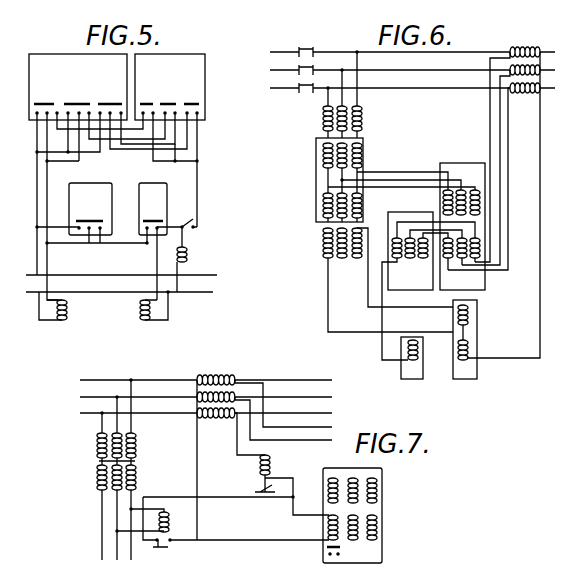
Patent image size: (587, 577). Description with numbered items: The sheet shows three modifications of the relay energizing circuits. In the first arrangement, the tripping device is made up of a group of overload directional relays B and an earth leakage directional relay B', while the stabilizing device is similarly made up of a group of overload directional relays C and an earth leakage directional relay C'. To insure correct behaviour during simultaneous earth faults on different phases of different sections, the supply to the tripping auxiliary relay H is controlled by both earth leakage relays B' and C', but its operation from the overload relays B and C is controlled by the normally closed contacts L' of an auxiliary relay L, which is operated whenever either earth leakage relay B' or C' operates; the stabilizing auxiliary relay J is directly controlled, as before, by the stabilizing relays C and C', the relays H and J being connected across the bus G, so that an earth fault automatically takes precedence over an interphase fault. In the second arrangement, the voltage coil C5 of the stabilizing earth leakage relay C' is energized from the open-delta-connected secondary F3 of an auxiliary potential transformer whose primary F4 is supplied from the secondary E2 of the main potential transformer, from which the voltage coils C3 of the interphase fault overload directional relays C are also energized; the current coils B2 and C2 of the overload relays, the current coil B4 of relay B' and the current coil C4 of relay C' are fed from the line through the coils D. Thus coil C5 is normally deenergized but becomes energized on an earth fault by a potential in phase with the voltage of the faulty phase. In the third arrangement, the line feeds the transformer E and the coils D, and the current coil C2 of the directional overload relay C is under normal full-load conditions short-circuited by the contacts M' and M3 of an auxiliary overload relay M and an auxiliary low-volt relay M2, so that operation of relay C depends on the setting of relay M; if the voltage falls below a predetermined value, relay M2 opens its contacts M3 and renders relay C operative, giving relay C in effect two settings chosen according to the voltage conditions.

In FIG. 5, the overload directional relays C is at (108, 177).
In FIG. 7, the overload directional relays C is at (366, 515).
In FIG. 5, the overload directional relays B is at (170, 140).
In FIG. 5, the earth leakage directional relay C' is at (92, 213).
In FIG. 6, the earth leakage directional relay C' is at (479, 345).
In FIG. 5, the earth leakage directional relay B' is at (160, 241).
In FIG. 6, the earth leakage directional relay B' is at (393, 364).
In FIG. 5, the normally closed contacts L' is at (202, 225).
In FIG. 5, the auxiliary relay L is at (196, 269).
In FIG. 5, the supply bus G is at (203, 292).
In FIG. 5, the stabilizing auxiliary relay J is at (68, 311).
In FIG. 5, the tripping auxiliary relay H is at (140, 312).
In FIG. 6, the reactance coils D is at (524, 52).
In FIG. 7, the reactance coils D is at (223, 380).
In FIG. 6, the secondary of the main potential transformer E2 is at (323, 156).
In FIG. 6, the primary of the auxiliary potential transformer F4 is at (323, 211).
In FIG. 6, the open-delta-connected secondary F3 is at (323, 247).
In FIG. 6, the current coils B2 is at (410, 258).
In FIG. 6, the voltage coils C3 is at (473, 188).
In FIG. 6, the current coil C2 is at (478, 258).
In FIG. 7, the current coil C2 is at (329, 528).
In FIG. 6, the voltage coil C5 is at (478, 316).
In FIG. 6, the current coil C4 is at (478, 348).
In FIG. 6, the current coil B4 is at (408, 352).
In FIG. 7, the transformer E is at (99, 483).
In FIG. 7, the auxiliary overload relay M is at (294, 485).
In FIG. 7, the auxiliary low-volt relay M2 is at (165, 511).
In FIG. 7, the contacts M' is at (262, 510).
In FIG. 7, the contacts M3 is at (170, 548).